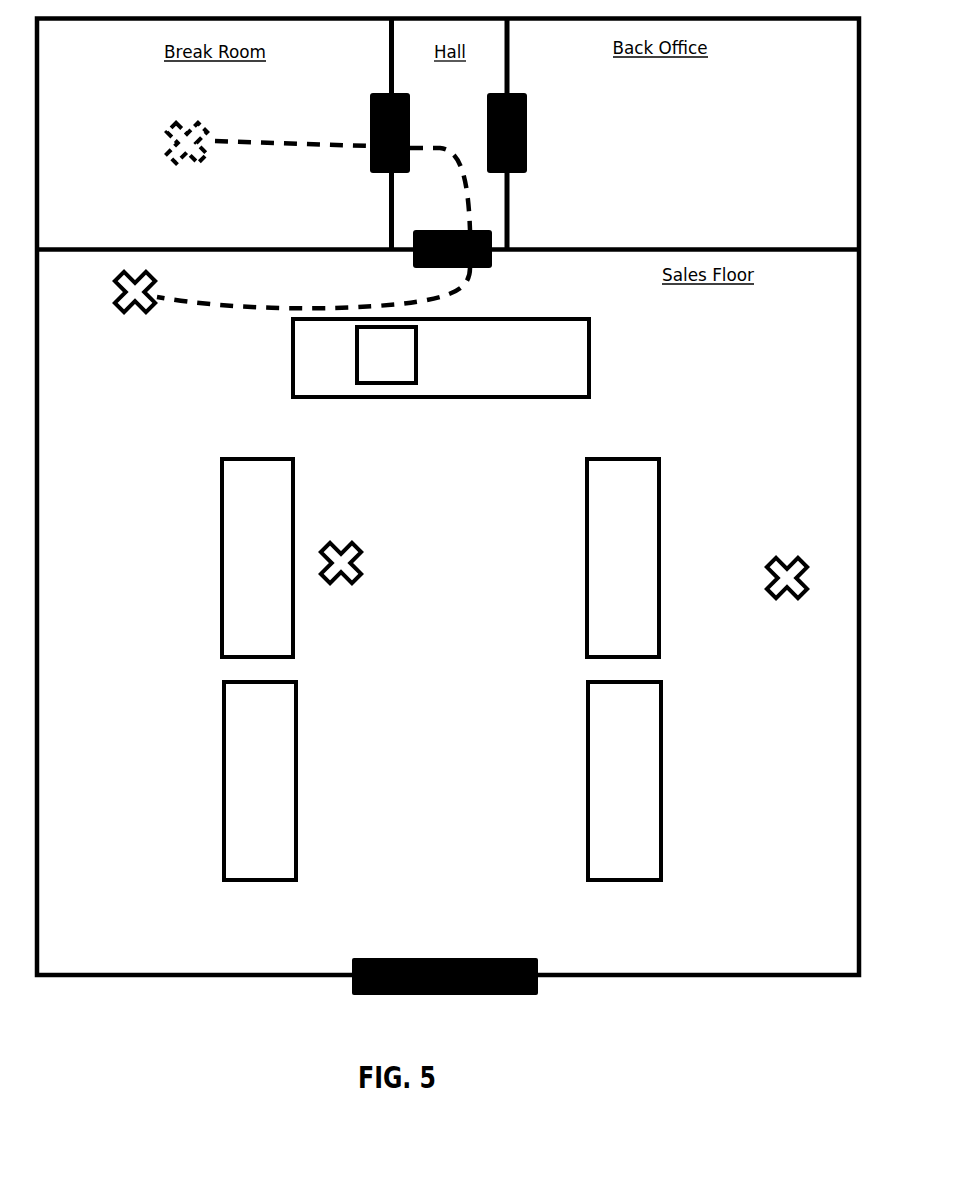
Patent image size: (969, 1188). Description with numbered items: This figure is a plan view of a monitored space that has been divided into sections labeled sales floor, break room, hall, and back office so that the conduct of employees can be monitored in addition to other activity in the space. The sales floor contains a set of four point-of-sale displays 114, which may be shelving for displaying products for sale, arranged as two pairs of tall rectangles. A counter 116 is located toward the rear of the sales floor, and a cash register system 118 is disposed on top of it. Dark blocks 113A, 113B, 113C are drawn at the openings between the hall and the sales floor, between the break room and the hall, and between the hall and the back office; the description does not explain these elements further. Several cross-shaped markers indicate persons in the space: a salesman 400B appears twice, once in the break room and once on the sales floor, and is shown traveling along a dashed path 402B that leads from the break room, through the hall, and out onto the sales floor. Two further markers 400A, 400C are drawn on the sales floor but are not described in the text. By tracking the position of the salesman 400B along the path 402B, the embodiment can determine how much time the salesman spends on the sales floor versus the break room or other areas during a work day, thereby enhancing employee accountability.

The sensor/reader at hall-sales floor doorway 113A is at (432, 259).
The sensor/reader at break room doorway 113B is at (370, 134).
The sensor/reader at back office doorway 113C is at (487, 134).
The point-of-sale display 114 is at (241, 528).
The counter 116 is at (494, 366).
The cash register system 118 is at (371, 366).
The tagged item location A 400A is at (357, 549).
The salesman 400B is at (166, 144).
The tagged item location C 400C is at (779, 558).
The path 402B is at (260, 141).